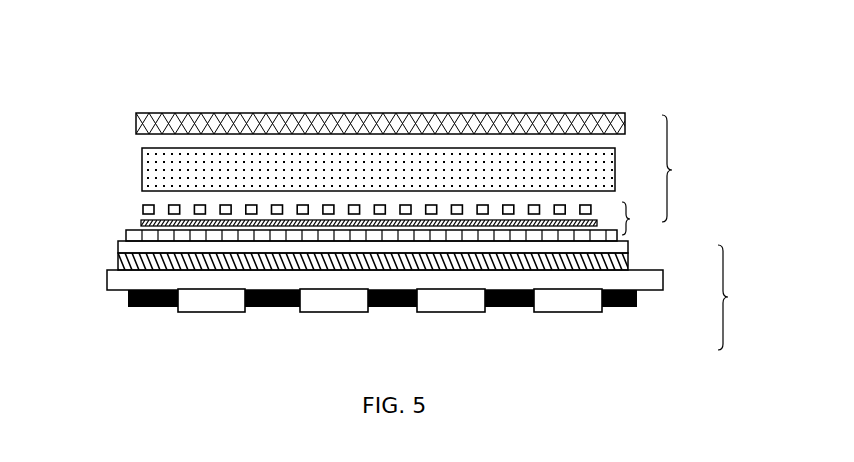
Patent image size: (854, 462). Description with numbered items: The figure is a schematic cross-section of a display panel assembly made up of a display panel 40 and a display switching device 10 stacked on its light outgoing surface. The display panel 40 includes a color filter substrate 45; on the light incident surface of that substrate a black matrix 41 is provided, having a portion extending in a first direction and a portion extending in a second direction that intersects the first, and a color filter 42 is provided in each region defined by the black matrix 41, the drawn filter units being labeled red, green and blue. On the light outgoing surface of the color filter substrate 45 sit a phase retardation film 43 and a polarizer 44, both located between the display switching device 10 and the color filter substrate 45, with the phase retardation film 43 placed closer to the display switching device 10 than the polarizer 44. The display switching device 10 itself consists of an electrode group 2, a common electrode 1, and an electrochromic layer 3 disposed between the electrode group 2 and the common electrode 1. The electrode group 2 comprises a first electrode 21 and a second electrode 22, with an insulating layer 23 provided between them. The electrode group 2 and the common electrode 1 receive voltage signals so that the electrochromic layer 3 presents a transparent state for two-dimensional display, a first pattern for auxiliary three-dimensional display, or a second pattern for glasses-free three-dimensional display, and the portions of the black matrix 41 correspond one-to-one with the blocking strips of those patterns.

The common electrode 1 is at (405, 122).
The electrochromic layer 3 is at (160, 175).
The display switching device 10 is at (695, 168).
The electrode group 2 is at (640, 221).
The first electrode 21 is at (188, 238).
The second electrode 22 is at (537, 212).
The insulating layer 23 is at (468, 222).
The phase retardation film 43 is at (135, 248).
The polarizer 44 is at (629, 260).
The color filter substrate 45 is at (663, 290).
The display panel 40 is at (747, 297).
The black matrix 41 is at (153, 305).
The color filter 42 is at (352, 312).